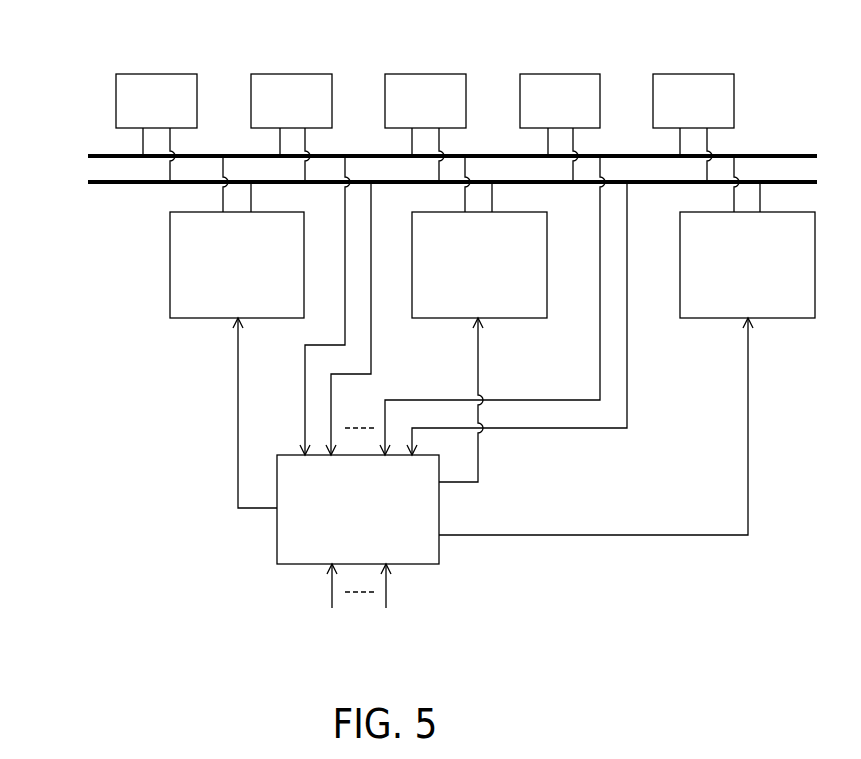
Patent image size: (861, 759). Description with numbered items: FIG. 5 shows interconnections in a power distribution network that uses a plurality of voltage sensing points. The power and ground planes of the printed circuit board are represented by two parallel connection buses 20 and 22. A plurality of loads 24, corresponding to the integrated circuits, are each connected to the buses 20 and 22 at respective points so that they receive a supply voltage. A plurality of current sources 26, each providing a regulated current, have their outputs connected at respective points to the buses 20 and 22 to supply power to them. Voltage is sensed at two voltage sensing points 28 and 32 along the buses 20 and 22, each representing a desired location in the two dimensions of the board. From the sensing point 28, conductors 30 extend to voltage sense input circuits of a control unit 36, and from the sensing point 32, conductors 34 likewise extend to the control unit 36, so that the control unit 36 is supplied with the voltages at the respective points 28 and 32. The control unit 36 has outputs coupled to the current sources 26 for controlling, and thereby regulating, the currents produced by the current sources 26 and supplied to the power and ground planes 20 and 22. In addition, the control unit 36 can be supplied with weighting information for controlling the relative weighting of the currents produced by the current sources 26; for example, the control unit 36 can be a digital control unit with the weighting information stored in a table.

The connection bus 20 is at (100, 153).
The connection bus 22 is at (100, 187).
The load 24 is at (252, 76).
The current source 26 is at (177, 305).
The voltage sensing point 28 is at (358, 145).
The conductors 30 is at (345, 337).
The voltage sensing point 32 is at (627, 145).
The conductors 34 is at (600, 337).
The control unit 36 is at (432, 498).